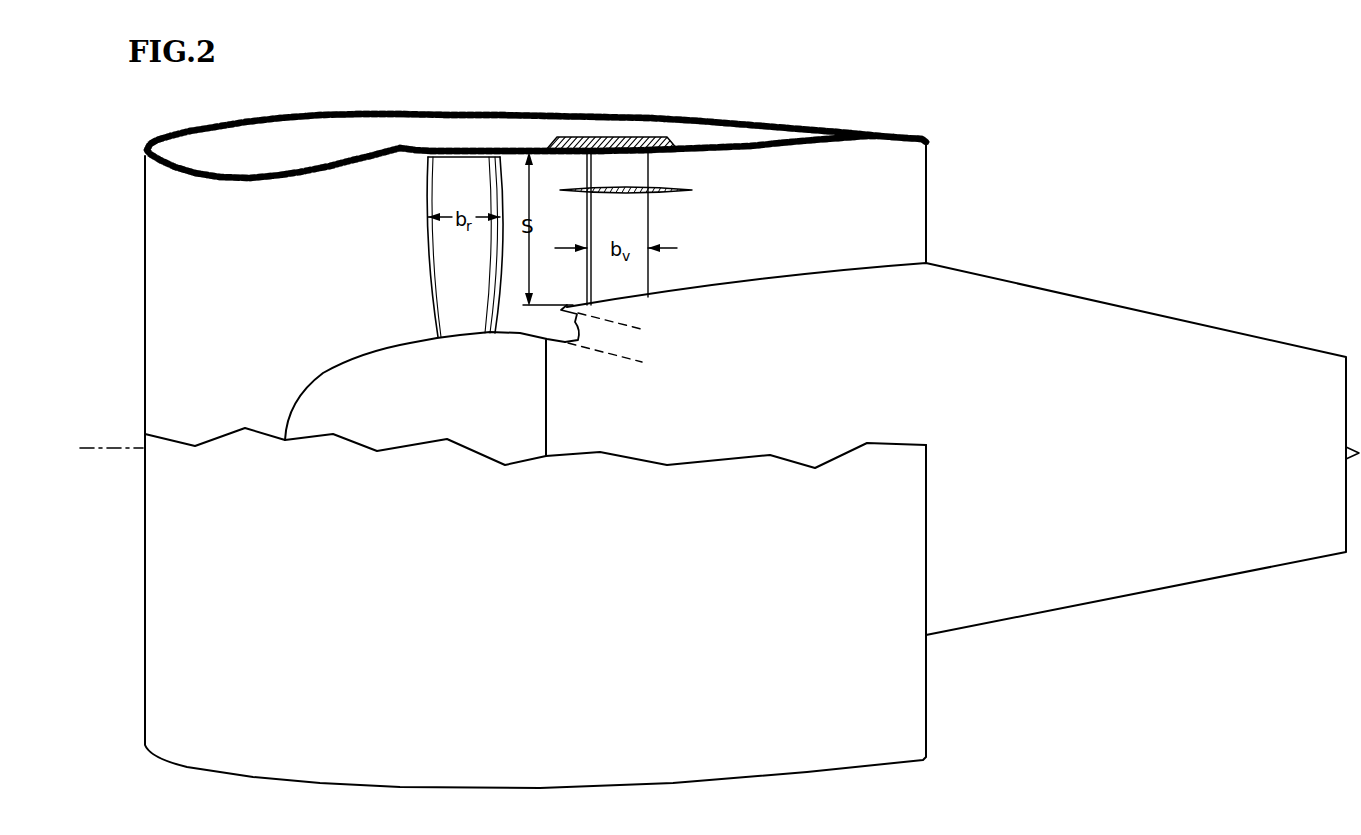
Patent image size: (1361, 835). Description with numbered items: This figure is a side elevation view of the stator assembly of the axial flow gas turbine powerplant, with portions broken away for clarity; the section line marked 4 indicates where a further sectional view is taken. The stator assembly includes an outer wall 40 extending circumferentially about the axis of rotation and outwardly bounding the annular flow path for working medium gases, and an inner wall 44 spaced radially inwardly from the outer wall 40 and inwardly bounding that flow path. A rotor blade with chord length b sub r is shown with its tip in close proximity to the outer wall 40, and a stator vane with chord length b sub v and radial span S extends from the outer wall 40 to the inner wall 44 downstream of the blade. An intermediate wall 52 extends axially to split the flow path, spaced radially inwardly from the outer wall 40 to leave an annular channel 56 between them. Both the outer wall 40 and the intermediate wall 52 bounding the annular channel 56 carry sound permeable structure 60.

The outer wall 40 is at (327, 173).
The inner wall 44 is at (737, 280).
The intermediate wall 52 is at (670, 187).
The annular channel 56 is at (571, 155).
The sound permeable structure 60 is at (593, 137).
The section line 4- 4 is at (404, 133).